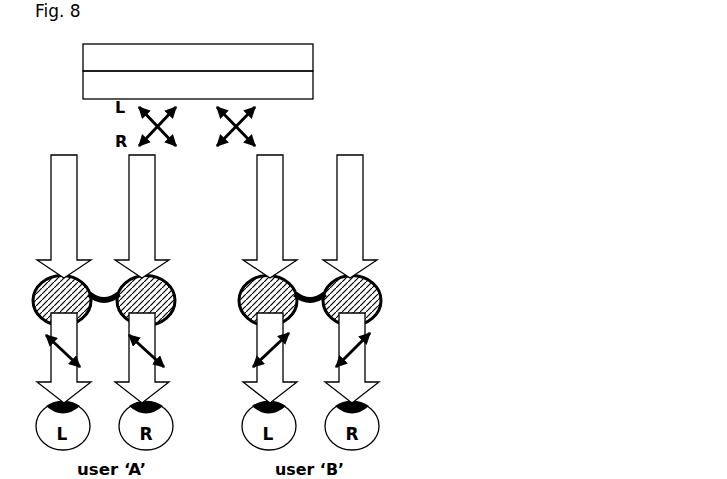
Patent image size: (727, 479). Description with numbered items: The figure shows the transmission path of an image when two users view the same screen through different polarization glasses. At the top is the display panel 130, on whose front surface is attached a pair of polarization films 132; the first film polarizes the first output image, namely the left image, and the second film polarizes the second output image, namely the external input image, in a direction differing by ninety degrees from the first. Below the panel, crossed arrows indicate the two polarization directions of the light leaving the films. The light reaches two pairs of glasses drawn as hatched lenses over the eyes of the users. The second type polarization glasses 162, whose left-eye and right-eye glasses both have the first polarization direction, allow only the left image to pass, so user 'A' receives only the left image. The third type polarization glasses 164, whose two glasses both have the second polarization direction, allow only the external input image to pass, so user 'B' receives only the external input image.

The display panel 130 is at (313, 51).
The pair of polarization films 132 is at (313, 86).
The second type polarization glasses 162 is at (182, 292).
The third type polarization glasses 164 is at (388, 292).